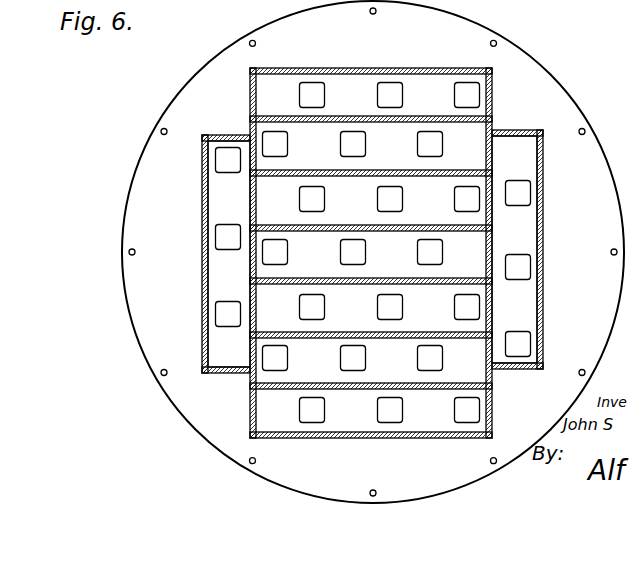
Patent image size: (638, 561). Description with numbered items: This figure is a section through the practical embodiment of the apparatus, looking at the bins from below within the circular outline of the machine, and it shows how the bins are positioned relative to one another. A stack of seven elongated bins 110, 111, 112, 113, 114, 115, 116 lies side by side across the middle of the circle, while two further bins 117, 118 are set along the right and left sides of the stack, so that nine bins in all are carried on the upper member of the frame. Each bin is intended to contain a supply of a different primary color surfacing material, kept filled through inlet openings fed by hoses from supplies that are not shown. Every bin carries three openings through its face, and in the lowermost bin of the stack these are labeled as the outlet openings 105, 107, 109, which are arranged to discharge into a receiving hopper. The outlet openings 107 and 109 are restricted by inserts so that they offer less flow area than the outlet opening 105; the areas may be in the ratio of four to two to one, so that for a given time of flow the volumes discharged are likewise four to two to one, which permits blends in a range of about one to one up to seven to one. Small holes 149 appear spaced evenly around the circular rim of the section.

The outlet opening 105 is at (469, 416).
The outlet opening 107 is at (316, 416).
The outlet opening 109 is at (392, 416).
The bin 110 is at (483, 422).
The bin 111 is at (480, 372).
The bin 112 is at (487, 303).
The bin 113 is at (473, 251).
The bin 114 is at (478, 178).
The bin 115 is at (477, 126).
The bin 116 is at (480, 104).
The bin 117 is at (518, 231).
The bin 118 is at (218, 194).
The bolt holes in disk 149 is at (262, 6).